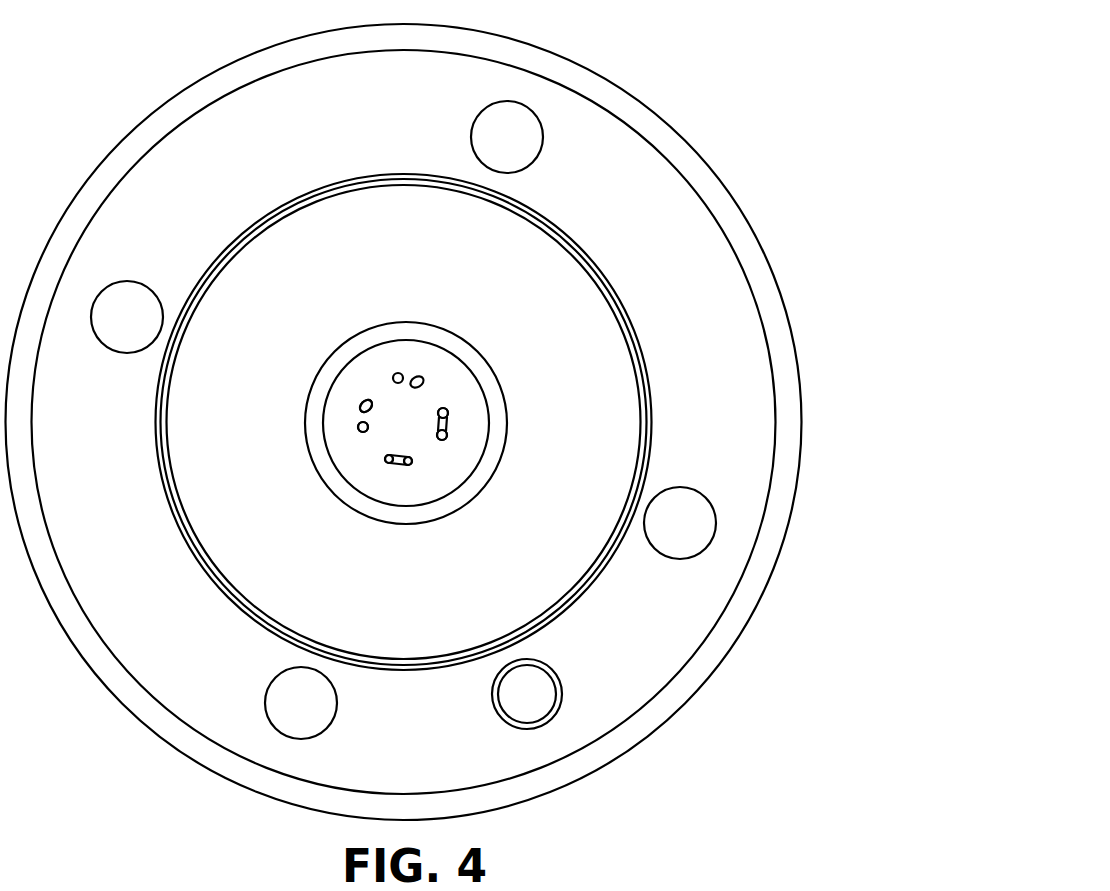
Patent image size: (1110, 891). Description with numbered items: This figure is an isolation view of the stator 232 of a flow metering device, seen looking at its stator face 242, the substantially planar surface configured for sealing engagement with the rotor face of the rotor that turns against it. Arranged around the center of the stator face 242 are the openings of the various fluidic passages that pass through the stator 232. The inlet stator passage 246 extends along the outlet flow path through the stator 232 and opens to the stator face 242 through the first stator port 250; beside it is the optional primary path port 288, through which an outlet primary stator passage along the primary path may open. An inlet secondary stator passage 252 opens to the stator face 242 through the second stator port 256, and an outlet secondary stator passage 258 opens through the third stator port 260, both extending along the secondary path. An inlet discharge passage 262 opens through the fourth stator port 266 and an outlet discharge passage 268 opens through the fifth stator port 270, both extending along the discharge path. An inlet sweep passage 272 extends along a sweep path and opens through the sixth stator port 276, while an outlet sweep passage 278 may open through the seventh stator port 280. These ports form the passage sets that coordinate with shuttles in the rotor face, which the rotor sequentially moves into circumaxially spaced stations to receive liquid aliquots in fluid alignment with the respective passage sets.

The stator 232 is at (746, 97).
The stator face 242 is at (434, 360).
The inlet stator passage 246 is at (403, 356).
The first stator port 250 is at (394, 375).
The primary path port 288 is at (424, 382).
The seventh stator port 280 is at (362, 400).
The outlet sweep passage 278 is at (346, 397).
The inlet sweep passage 272 is at (345, 429).
The sixth stator port 276 is at (368, 428).
The second stator port 256 is at (448, 409).
The inlet secondary stator passage 252 is at (463, 415).
The outlet secondary stator passage 258 is at (461, 448).
The third stator port 260 is at (436, 440).
The fifth stator port 270 is at (373, 472).
The outlet discharge passage 268 is at (385, 466).
The inlet discharge passage 262 is at (402, 482).
The fourth stator port 266 is at (410, 467).